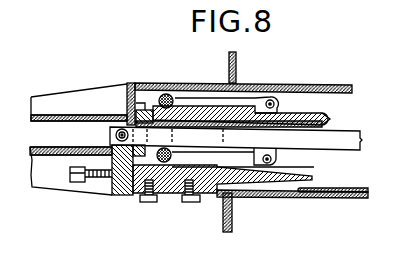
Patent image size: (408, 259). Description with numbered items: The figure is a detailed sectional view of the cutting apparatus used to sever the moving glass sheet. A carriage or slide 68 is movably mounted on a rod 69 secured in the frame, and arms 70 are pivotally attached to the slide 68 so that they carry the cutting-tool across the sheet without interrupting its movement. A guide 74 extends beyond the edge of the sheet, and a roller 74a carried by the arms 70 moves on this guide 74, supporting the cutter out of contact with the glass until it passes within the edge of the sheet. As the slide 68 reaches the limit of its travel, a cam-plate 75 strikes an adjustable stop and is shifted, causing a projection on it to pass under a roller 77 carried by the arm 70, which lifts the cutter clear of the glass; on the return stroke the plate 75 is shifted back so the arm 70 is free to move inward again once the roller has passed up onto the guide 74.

The roller 77 is at (167, 92).
The arms 70 is at (240, 165).
The carriage or slide 68 is at (290, 118).
The cam-plate 75 is at (328, 114).
The rod 69 is at (348, 145).
The guide 74 is at (217, 197).
The roller 74a is at (167, 200).